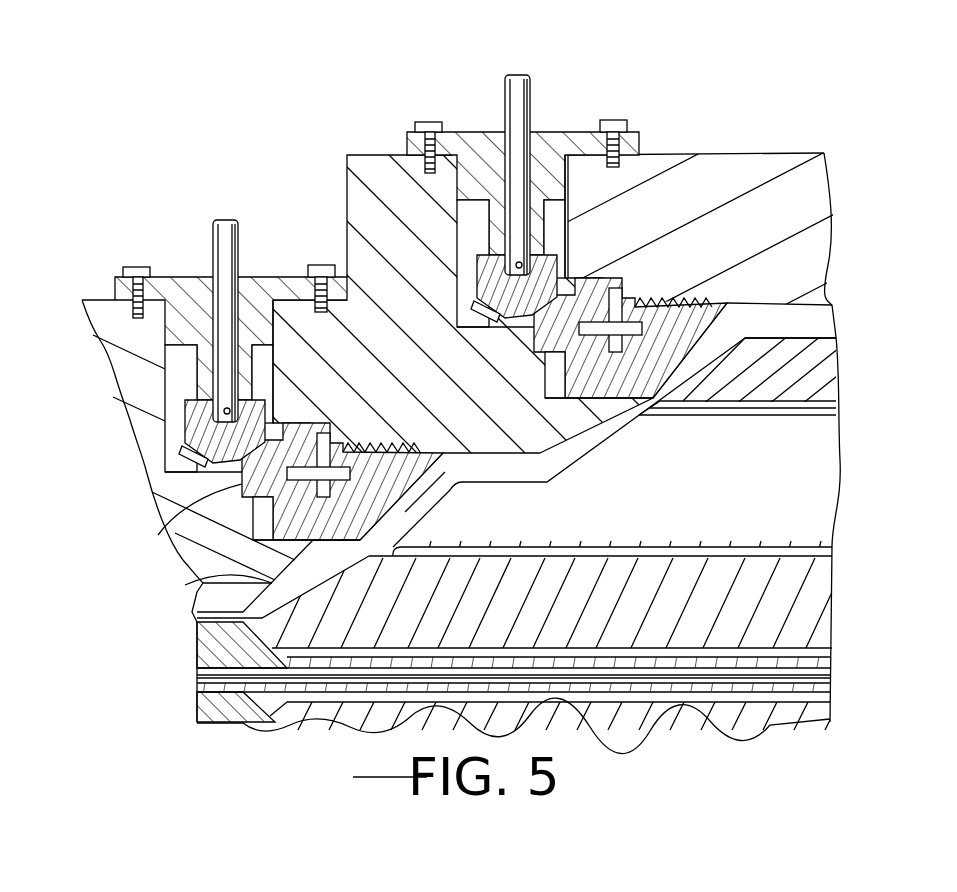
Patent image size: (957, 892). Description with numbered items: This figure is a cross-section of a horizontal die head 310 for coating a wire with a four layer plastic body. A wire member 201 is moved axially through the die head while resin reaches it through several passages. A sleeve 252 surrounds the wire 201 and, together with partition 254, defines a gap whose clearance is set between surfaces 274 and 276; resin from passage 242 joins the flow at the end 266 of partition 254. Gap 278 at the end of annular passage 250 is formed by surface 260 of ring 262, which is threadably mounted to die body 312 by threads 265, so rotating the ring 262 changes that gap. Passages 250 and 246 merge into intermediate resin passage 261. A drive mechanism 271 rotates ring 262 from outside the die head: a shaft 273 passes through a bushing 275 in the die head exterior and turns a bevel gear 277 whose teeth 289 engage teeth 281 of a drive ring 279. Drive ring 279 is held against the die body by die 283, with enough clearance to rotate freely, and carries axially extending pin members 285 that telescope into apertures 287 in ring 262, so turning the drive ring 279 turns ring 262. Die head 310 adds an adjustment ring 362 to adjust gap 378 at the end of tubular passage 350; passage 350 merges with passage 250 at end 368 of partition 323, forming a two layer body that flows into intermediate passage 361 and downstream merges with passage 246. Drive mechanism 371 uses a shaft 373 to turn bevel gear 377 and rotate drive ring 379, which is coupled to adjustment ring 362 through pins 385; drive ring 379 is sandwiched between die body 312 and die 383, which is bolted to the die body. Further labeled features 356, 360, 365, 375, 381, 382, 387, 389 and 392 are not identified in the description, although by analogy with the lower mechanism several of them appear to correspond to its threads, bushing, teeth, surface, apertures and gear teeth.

The wire member 201 is at (832, 677).
The resin passage 242 is at (832, 650).
The resin passage 246 is at (832, 553).
The annular passage 250 is at (838, 412).
The sleeve 252 is at (828, 688).
The partition 254 is at (820, 597).
The surface 260 is at (445, 510).
The intermediate resin passage 261 is at (207, 582).
The ring 262 is at (446, 471).
The threads 265 is at (440, 416).
The end of partition 266 is at (207, 644).
The drive mechanism 271 is at (203, 210).
The shaft 273 is at (238, 228).
The surface 274 is at (270, 645).
The bushing 275 is at (172, 277).
The surface 276 is at (268, 628).
The bevel gear 277 is at (183, 422).
The gap 278 is at (376, 549).
The drive ring 279 is at (172, 533).
The teeth 281 is at (288, 427).
The die 283 is at (98, 300).
The pin members 285 is at (318, 462).
The apertures 287 is at (398, 422).
The bevel gear teeth 289 is at (165, 490).
The die head 310 is at (805, 132).
The die body 312 is at (808, 150).
The partition 323 is at (817, 373).
The tubular passage 350 is at (834, 322).
The block 356 is at (823, 455).
The band 360 is at (722, 326).
The intermediate passage 361 is at (612, 437).
The adjustment ring 362 is at (714, 303).
The threads 365 is at (692, 302).
The end of partition 368 is at (420, 543).
The drive mechanism 371 is at (607, 85).
The shaft 373 is at (530, 92).
The flange 375 is at (598, 104).
The bevel gear 377 is at (477, 255).
The gap 378 is at (658, 413).
The drive ring 379 is at (603, 270).
The gland nut 381 is at (573, 292).
The passage wall 382 is at (513, 488).
The die 383 is at (357, 153).
The pins 385 is at (615, 297).
The pin 387 is at (613, 390).
The housing cavity 389 is at (452, 322).
The block 392 is at (835, 352).